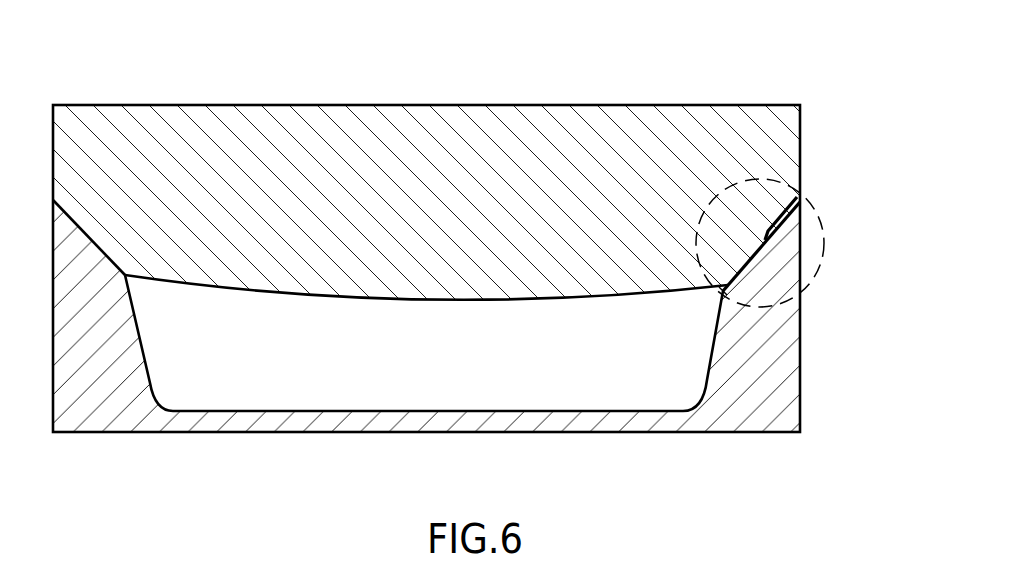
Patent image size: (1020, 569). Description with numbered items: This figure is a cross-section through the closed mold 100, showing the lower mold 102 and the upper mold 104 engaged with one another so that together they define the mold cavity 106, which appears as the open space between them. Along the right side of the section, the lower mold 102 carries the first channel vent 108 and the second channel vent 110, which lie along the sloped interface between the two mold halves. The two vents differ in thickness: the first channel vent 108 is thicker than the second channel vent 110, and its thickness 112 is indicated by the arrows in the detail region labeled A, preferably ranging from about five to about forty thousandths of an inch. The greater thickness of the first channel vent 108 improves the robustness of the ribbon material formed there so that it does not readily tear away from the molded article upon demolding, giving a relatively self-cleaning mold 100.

The mold 100 is at (569, 77).
The lower mold 102 is at (717, 420).
The upper mold 104 is at (340, 118).
The mold cavity 106 is at (437, 370).
The first channel vent 108 is at (766, 261).
The second channel vent 110 is at (774, 230).
The thickness 112 is at (768, 282).
The detail region A is at (816, 278).